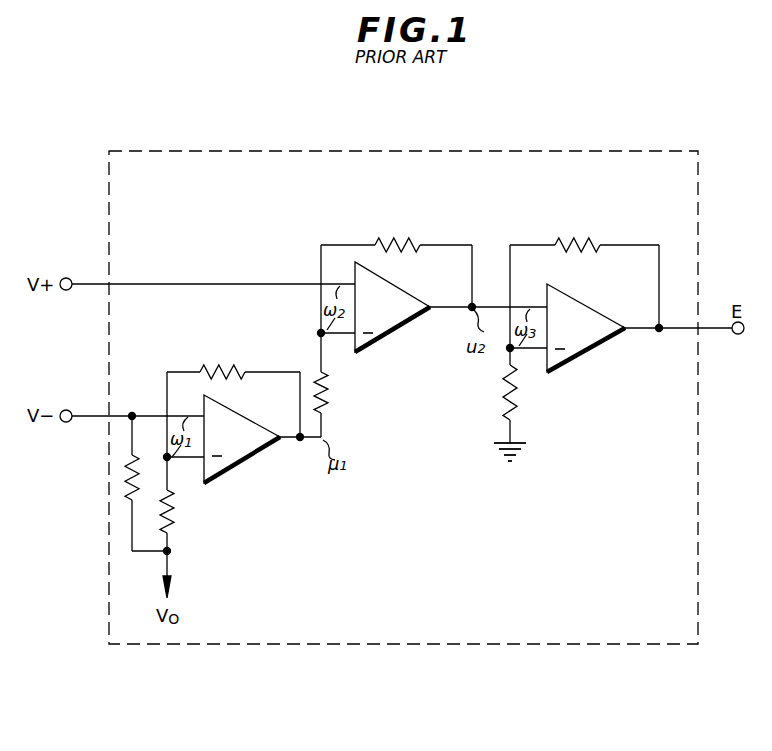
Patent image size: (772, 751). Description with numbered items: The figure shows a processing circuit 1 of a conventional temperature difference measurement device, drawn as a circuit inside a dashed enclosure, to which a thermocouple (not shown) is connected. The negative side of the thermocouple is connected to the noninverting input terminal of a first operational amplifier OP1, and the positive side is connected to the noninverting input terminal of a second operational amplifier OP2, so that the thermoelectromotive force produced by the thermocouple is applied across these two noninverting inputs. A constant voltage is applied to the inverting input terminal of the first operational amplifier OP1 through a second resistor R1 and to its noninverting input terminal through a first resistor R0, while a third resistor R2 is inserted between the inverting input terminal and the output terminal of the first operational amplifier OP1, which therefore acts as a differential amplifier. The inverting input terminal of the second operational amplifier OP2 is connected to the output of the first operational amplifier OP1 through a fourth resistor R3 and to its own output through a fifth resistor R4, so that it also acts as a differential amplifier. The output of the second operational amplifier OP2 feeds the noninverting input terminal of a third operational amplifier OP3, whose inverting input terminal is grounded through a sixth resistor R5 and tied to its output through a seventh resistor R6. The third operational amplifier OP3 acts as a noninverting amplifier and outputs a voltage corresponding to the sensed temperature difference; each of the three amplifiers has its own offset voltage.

The processing circuit 1 is at (603, 644).
The first resistor R0 is at (146, 483).
The second resistor R1 is at (180, 504).
The third resistor R2 is at (233, 399).
The fourth resistor R3 is at (334, 385).
The fifth resistor R4 is at (396, 273).
The sixth resistor R5 is at (518, 404).
The seventh resistor R6 is at (584, 280).
The first operational amplifier OP1 is at (242, 439).
The second operational amplifier OP2 is at (392, 307).
The third operational amplifier OP3 is at (586, 328).